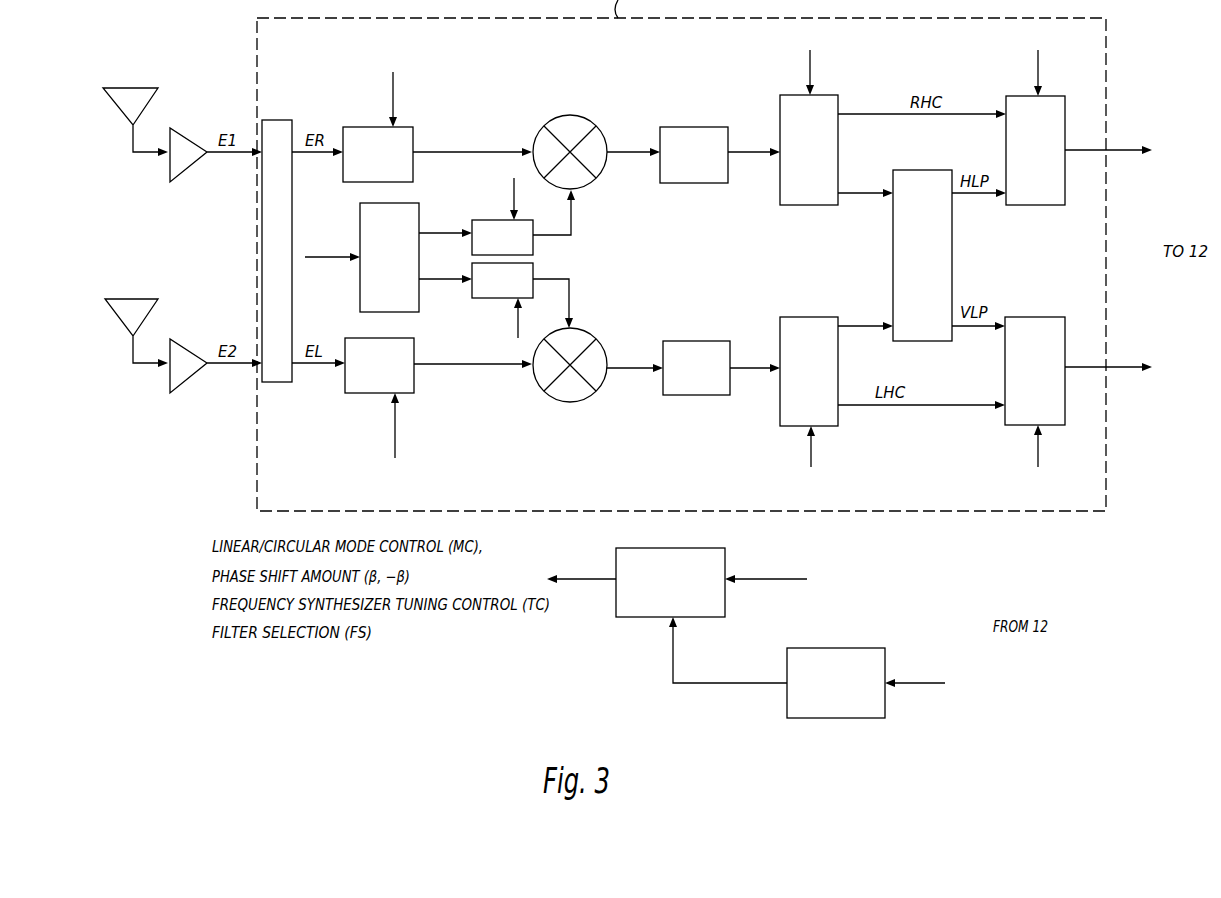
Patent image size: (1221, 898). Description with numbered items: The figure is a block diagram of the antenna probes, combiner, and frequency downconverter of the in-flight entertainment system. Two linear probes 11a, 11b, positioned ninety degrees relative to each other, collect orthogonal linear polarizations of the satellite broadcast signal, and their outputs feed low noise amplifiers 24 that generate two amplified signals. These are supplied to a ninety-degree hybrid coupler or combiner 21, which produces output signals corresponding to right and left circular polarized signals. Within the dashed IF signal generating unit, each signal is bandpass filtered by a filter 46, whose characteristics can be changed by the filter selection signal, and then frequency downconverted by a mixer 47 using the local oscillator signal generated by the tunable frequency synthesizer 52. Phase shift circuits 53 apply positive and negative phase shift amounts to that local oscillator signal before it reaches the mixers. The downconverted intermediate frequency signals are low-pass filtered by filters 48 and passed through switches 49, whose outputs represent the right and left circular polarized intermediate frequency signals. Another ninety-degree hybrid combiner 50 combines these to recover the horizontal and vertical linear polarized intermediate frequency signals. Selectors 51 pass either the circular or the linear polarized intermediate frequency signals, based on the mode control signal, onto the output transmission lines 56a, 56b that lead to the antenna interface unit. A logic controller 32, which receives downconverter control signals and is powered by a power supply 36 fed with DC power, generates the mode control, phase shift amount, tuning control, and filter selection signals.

The linear probe 11a is at (117, 88).
The linear probe 11b is at (128, 299).
The low noise amplifier 24 is at (176, 130).
The 90° hybrid coupler or combiner 21 is at (271, 120).
The filter 46 is at (363, 127).
The mixer 47 is at (563, 115).
The filter 48 is at (707, 127).
The switch 49 is at (825, 95).
The 90° hybrid coupler or combiner 50 is at (915, 341).
The selector 51 is at (1025, 205).
The tunable frequency synthesizer 52 is at (358, 223).
The phase shift circuit 53 is at (523, 259).
The logic controller 32 is at (695, 548).
The power supply 36 is at (845, 648).
The output transmission line 56a is at (1115, 149).
The output transmission line 56b is at (1117, 366).